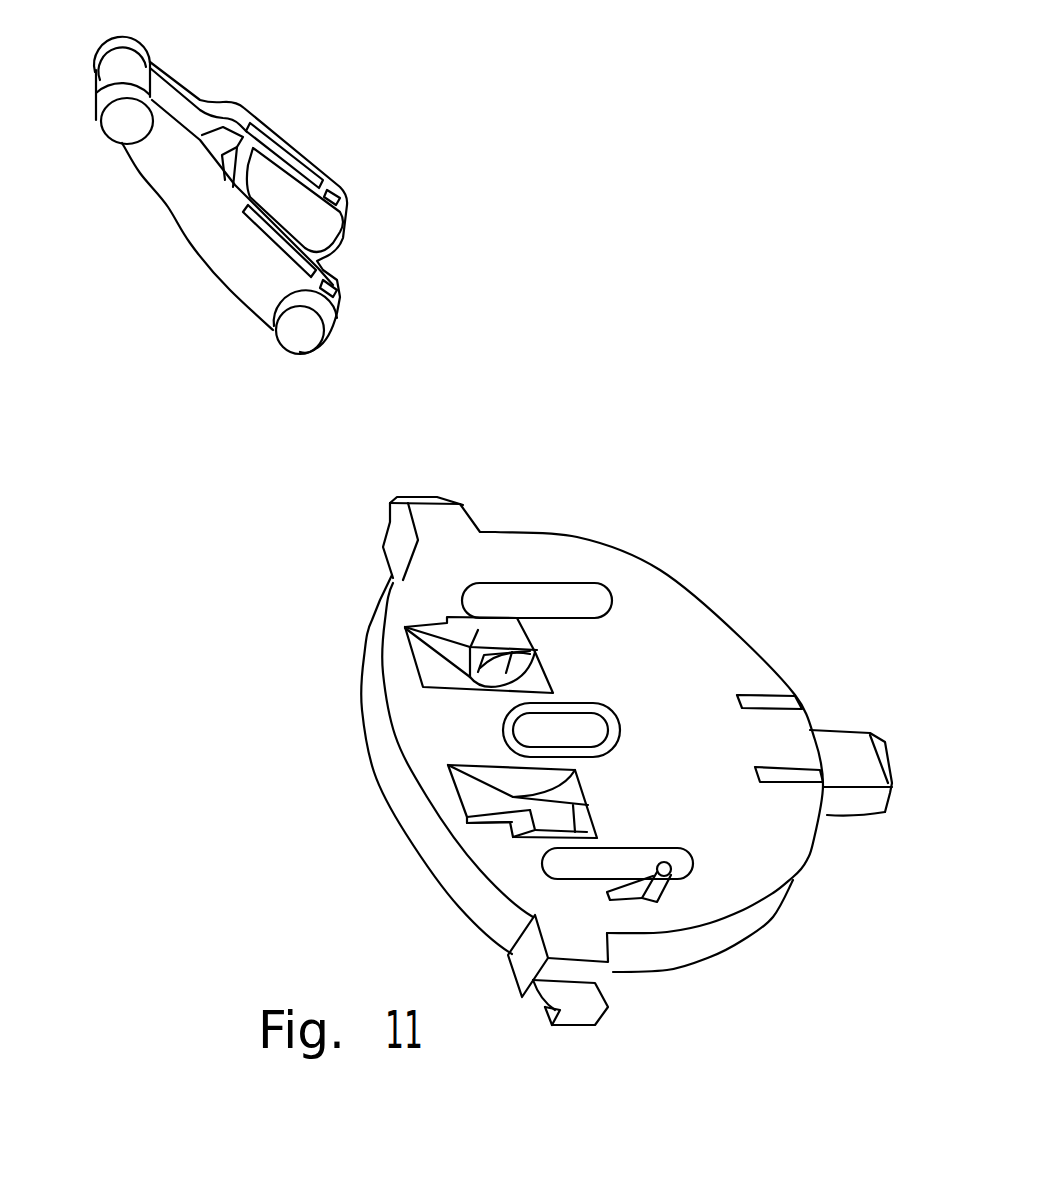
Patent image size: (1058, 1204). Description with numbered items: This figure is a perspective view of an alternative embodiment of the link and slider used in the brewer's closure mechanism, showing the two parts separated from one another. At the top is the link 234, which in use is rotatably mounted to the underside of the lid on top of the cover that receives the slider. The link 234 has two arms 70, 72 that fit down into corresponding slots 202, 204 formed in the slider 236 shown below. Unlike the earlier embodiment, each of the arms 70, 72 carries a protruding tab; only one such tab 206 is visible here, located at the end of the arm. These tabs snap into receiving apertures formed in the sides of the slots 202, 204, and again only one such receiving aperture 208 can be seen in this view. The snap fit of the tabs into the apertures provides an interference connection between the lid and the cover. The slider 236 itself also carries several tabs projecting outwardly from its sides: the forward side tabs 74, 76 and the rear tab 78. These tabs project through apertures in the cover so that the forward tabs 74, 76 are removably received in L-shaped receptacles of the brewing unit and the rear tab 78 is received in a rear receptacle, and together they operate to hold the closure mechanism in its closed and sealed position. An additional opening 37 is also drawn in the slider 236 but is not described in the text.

The link 234 is at (400, 107).
The arm 70 is at (280, 158).
The arm 72 is at (205, 213).
The tab 206 is at (302, 332).
The slider 236 is at (787, 557).
The tab 74 is at (457, 515).
The aperture 37 is at (583, 737).
The receiving aperture 208 is at (497, 667).
The slot 202 is at (450, 670).
The slot 204 is at (485, 793).
The rear tab 78 is at (855, 760).
The tab 76 is at (608, 960).